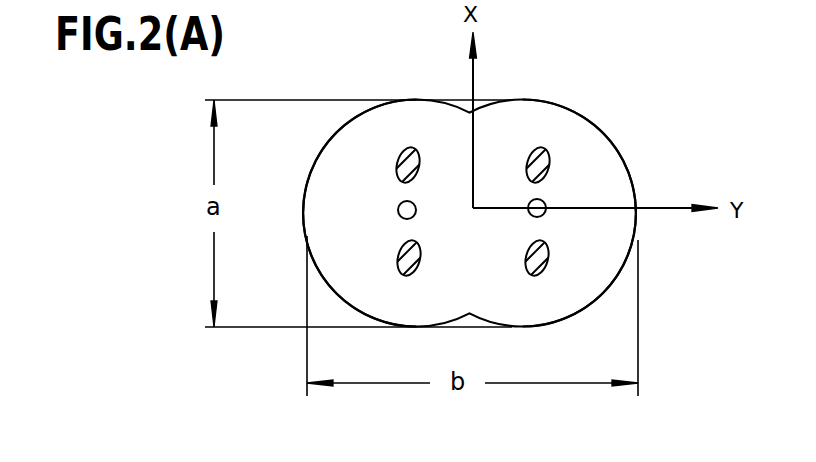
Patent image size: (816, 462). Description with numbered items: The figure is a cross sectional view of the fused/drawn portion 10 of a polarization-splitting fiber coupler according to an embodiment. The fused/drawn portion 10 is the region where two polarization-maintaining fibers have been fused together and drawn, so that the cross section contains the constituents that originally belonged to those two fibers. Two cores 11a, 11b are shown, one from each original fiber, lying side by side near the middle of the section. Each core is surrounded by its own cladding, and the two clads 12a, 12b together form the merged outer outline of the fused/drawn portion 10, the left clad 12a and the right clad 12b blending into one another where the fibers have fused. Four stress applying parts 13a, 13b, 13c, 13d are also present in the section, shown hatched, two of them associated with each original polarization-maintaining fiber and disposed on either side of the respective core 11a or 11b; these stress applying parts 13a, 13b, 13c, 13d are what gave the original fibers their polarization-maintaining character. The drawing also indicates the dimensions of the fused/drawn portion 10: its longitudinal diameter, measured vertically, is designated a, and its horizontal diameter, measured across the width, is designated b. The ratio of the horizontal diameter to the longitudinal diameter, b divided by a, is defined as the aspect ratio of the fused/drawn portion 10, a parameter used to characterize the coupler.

The fused/drawn portion 10 is at (590, 114).
The core 11a is at (403, 203).
The core 11b is at (538, 199).
The clad 12a is at (316, 242).
The clad 12b is at (614, 246).
The stress applying part 13a is at (405, 152).
The stress applying part 13b is at (402, 272).
The stress applying part 13c is at (537, 148).
The stress applying part 13d is at (545, 274).